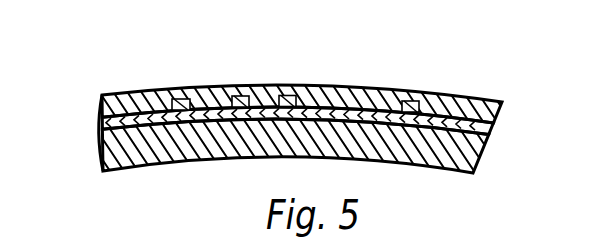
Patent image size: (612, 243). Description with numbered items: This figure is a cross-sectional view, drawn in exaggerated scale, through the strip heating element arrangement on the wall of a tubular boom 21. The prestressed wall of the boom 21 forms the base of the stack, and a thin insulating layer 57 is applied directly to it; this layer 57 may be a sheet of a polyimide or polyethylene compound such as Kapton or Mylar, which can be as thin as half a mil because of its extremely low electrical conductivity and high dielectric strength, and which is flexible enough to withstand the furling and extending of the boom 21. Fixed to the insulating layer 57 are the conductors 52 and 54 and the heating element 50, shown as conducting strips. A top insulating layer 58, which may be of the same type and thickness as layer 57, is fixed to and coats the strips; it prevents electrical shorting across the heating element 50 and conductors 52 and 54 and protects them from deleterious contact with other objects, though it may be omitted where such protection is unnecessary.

The tubular boom 21 is at (477, 163).
The heating element 50 is at (290, 95).
The conductor 52 is at (185, 98).
The conductor 54 is at (410, 100).
The insulating layer 57 is at (490, 131).
The top insulating layer 58 is at (495, 116).